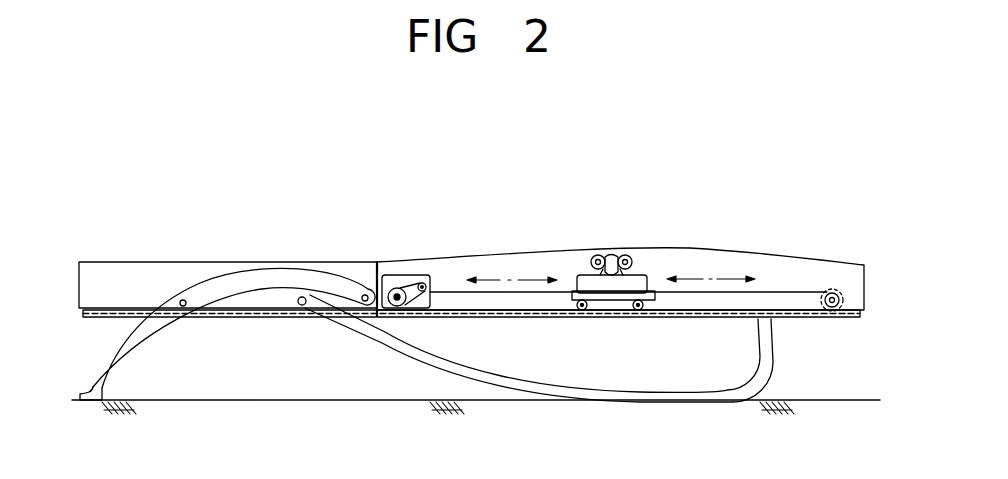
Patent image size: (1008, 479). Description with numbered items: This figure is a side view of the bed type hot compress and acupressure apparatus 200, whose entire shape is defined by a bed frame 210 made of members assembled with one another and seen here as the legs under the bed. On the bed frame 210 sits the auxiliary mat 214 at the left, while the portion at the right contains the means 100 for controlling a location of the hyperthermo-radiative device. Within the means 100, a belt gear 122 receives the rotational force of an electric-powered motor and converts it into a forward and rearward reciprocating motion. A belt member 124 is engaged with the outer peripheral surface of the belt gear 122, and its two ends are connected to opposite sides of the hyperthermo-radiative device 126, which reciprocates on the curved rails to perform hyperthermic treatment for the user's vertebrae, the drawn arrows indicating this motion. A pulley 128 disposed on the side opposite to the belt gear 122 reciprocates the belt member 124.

The means for controlling a location of the hyperthermo-radiative device 100 is at (415, 273).
The belt gear 122 is at (395, 288).
The belt member 124 is at (496, 290).
The hyperthermo-radiative device 126 is at (641, 262).
The pulley 128 is at (831, 290).
The bed type hot compress and acupressure apparatus 200 is at (318, 174).
The bed frame 210 is at (288, 277).
The auxiliary mat 214 is at (178, 268).